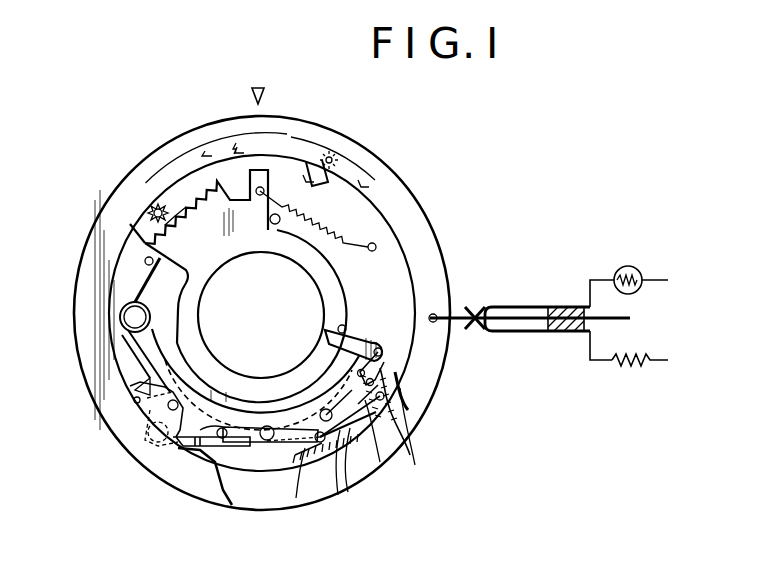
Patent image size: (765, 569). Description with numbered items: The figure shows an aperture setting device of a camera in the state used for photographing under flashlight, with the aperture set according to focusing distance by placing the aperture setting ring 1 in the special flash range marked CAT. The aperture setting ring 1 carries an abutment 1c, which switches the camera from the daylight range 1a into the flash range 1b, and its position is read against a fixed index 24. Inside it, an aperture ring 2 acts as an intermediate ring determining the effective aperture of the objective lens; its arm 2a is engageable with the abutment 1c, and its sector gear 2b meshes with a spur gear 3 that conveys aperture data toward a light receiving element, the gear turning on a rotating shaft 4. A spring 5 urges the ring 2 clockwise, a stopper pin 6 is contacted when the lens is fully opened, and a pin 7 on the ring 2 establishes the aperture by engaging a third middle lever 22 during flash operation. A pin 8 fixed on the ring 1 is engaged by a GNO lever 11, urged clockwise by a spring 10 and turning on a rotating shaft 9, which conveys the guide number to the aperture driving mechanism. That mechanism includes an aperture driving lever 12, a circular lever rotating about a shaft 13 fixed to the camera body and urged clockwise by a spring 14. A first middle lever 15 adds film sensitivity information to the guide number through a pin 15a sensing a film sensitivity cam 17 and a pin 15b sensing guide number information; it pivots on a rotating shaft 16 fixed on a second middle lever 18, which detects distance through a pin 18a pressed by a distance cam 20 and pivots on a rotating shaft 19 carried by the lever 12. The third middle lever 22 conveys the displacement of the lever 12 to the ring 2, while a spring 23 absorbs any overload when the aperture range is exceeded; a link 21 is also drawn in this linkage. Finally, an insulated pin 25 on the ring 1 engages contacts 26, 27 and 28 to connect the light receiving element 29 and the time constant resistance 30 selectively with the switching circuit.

The aperture setting ring 1 is at (116, 226).
The daylight range 1a is at (337, 170).
The flash range 1b is at (232, 152).
The abutment 1c is at (326, 184).
The aperture ring 2 is at (248, 238).
The arm 2a is at (266, 173).
The sector gear 2b is at (196, 215).
The spur gear 3 is at (140, 222).
The rotating shaft 4 is at (157, 208).
The spring 5 is at (368, 250).
The stopper pin 6 is at (285, 230).
The pin 7 is at (343, 325).
The pin 8 is at (198, 385).
The rotating shaft 9 is at (222, 420).
The spring 10 is at (133, 396).
The GNO lever 11 is at (208, 448).
The aperture driving lever 12 is at (130, 345).
The shaft 13 is at (122, 317).
The spring 14 is at (133, 290).
The first middle lever 15 is at (256, 428).
The pin 15a is at (345, 452).
The pin 15b is at (258, 405).
The rotating shaft 16 is at (266, 441).
The cam 17 is at (306, 460).
The second middle lever 18 is at (362, 440).
The pin 18a is at (402, 410).
The rotating shaft 19 is at (355, 450).
The cam 20 is at (398, 393).
The link 21 is at (385, 392).
The third middle lever 22 is at (372, 344).
The spring 23 is at (372, 370).
The fixed index 24 is at (262, 84).
The pin 25 is at (436, 312).
The contact 26 is at (540, 307).
The contact 27 is at (588, 338).
The contact 28 is at (510, 307).
The light receiving element 29 is at (634, 266).
The time constant resistance 30 is at (634, 366).